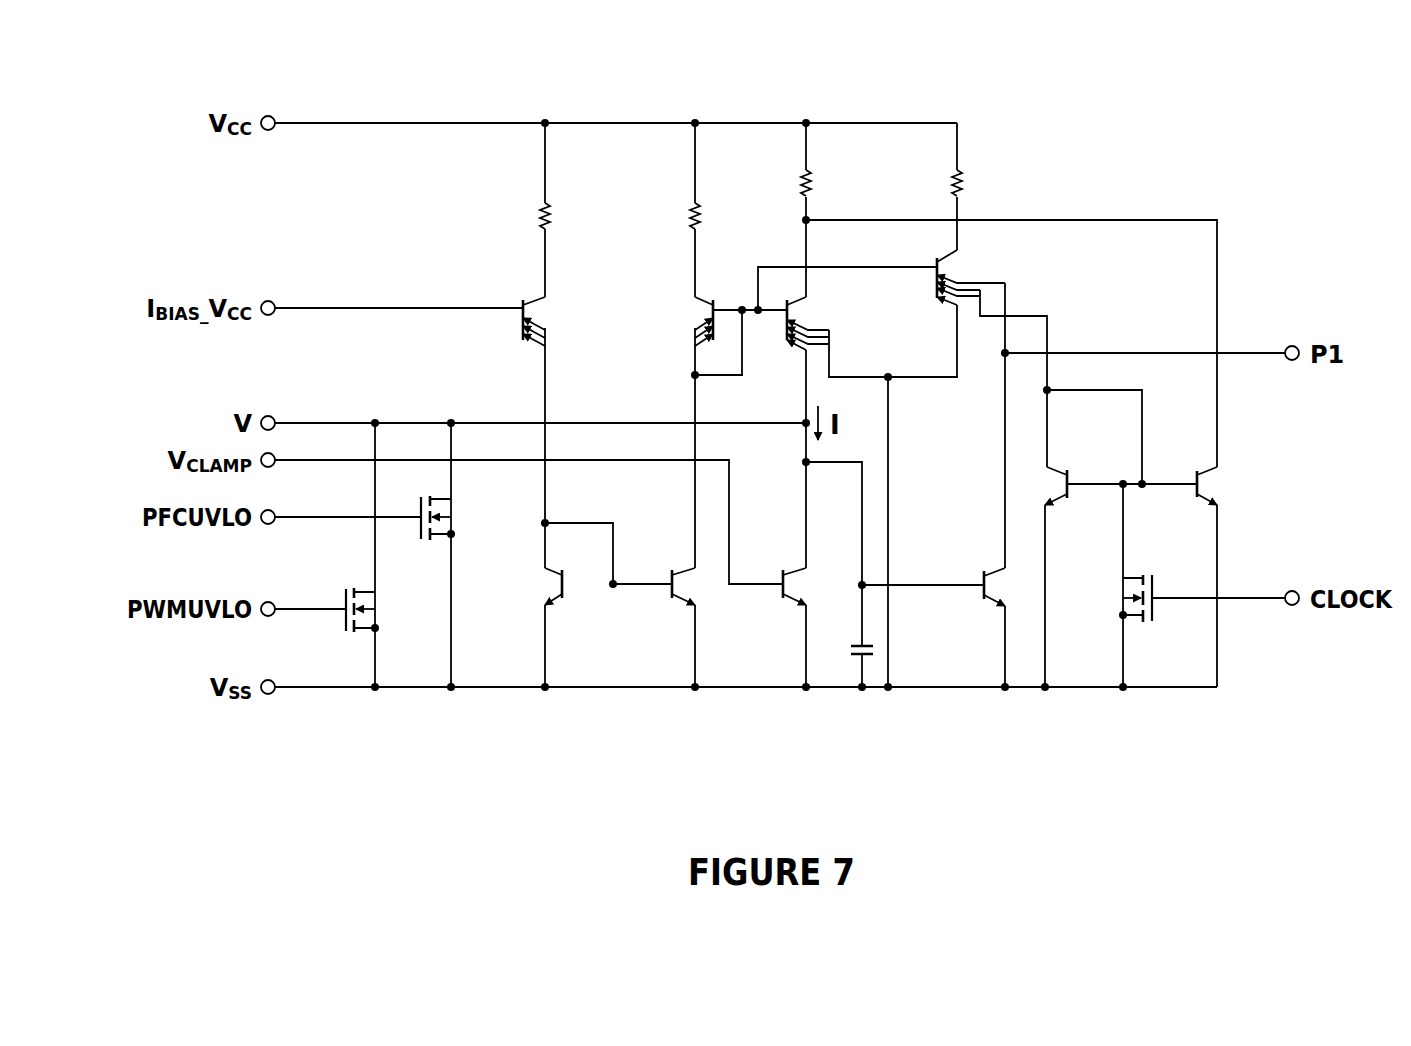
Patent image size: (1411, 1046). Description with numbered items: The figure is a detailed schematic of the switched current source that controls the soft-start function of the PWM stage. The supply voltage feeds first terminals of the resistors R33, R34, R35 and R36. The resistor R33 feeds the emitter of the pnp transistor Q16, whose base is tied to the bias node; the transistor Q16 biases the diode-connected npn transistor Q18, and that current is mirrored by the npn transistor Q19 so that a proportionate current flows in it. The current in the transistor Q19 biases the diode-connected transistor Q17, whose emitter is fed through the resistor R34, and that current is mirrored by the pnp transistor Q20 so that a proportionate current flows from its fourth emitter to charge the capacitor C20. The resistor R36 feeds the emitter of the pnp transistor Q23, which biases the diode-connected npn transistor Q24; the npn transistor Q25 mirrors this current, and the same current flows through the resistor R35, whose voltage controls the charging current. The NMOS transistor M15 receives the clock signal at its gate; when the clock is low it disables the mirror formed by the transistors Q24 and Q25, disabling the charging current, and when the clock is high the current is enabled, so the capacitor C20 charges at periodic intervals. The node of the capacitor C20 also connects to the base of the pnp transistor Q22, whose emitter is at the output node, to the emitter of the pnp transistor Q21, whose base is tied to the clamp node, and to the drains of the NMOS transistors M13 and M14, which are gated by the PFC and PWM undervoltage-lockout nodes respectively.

The resistor R33 is at (570, 214).
The resistor R34 is at (670, 214).
The resistor R35 is at (831, 184).
The resistor R36 is at (982, 184).
The pnp bipolar transistor Q16 is at (558, 321).
The transistor Q17 is at (680, 321).
The npn bipolar transistor Q18 is at (527, 586).
The npn bipolar transistor Q19 is at (662, 600).
The pnp bipolar transistor Q20 is at (827, 323).
The pnp bipolar transistor Q21 is at (777, 573).
The pnp bipolar transistor Q22 is at (976, 600).
The pnp bipolar transistor Q23 is at (977, 277).
The npn bipolar transistor Q24 is at (1079, 475).
The npn bipolar transistor Q25 is at (1232, 486).
The capacitor C20 is at (841, 634).
The NMOS transistor M13 is at (466, 518).
The NMOS transistor M14 is at (394, 610).
The NMOS transistor M15 is at (1110, 598).